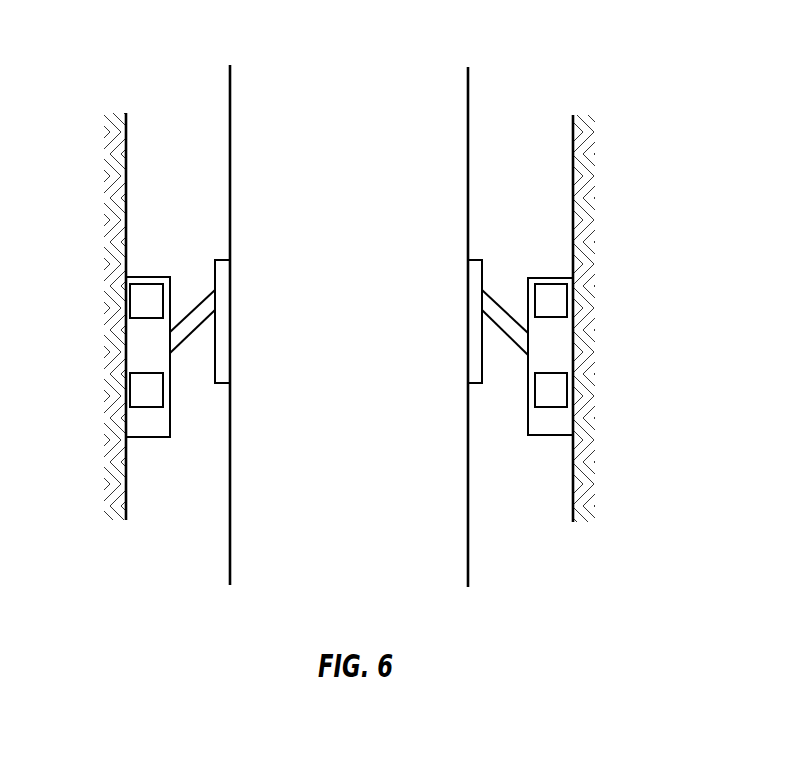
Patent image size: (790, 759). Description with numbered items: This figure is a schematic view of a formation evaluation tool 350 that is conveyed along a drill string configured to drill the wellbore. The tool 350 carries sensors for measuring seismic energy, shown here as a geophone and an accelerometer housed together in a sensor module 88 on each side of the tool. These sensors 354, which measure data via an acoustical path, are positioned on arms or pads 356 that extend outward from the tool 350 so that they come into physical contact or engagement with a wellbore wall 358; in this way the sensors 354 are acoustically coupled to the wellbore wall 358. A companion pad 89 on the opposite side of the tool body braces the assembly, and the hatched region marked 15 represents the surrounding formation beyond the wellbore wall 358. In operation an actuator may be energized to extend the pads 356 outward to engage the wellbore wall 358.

The formation evaluation tool 350 is at (513, 103).
The sensor module 88 is at (145, 277).
The stabilizer pad 89 is at (225, 260).
The arms or pads 356 is at (487, 292).
The sensors 354 is at (567, 297).
The wellbore wall 358 is at (126, 478).
The formation 15 is at (573, 478).